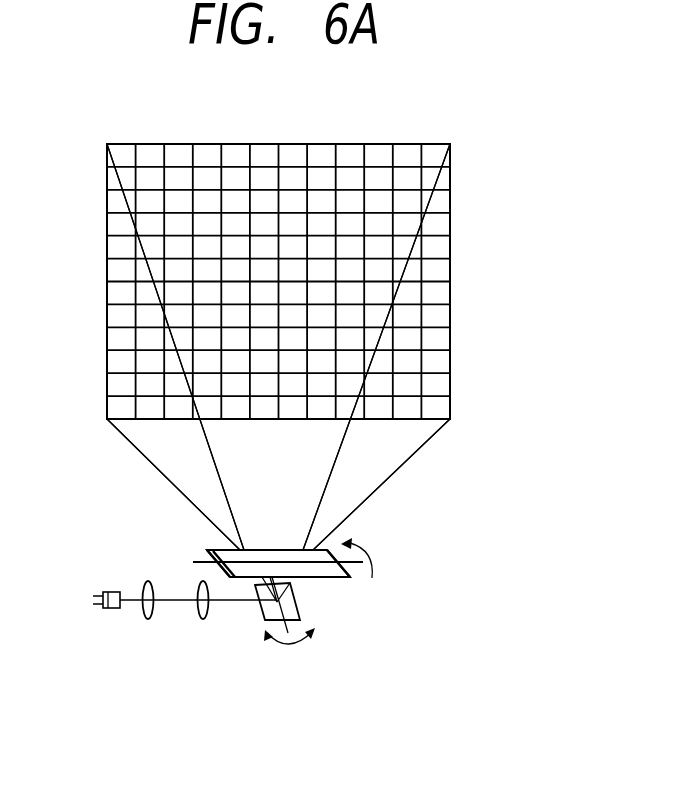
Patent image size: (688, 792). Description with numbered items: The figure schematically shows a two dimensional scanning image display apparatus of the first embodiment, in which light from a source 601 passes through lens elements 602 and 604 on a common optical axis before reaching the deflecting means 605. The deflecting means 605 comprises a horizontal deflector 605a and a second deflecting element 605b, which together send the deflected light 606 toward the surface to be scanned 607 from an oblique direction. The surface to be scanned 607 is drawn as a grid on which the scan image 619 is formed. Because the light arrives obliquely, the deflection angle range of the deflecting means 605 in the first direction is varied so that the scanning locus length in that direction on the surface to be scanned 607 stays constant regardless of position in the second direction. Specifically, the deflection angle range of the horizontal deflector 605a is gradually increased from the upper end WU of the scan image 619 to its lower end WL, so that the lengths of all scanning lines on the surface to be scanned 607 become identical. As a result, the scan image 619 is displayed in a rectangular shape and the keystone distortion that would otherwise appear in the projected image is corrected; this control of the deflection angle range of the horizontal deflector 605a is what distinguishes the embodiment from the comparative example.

The light source (laser) 601 is at (112, 610).
The collimator lens 602 is at (147, 622).
The lens 604 is at (203, 621).
The deflecting means 605 is at (335, 608).
The horizontal deflector 605a is at (302, 608).
The second deflecting mirror (rotating mirror) 605b is at (305, 578).
The scanning light beam 606 is at (393, 477).
The surface to be scanned 607 is at (262, 142).
The scan image 619 is at (433, 298).
The upper end of the scan image WU is at (451, 145).
The lower end of the scan image WL is at (452, 421).